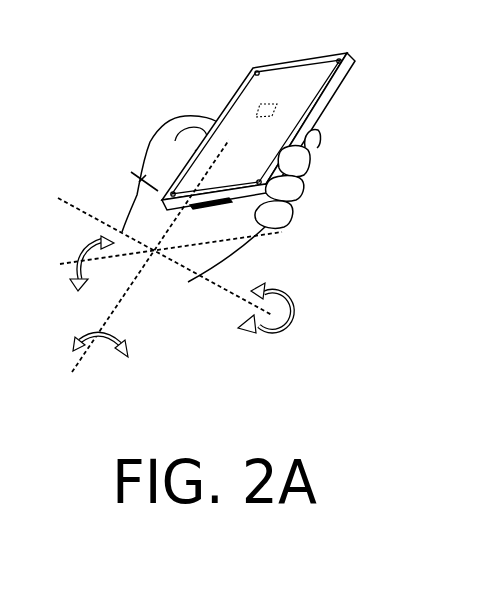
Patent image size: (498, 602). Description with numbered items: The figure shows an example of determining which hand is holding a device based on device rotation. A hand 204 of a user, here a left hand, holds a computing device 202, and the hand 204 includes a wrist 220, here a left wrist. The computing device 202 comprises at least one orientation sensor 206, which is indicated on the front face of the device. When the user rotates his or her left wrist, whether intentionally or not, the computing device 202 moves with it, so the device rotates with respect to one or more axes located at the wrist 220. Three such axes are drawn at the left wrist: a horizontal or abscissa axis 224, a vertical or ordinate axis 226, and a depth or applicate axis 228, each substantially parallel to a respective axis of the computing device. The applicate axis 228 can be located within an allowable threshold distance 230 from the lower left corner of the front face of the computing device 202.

The computing device 202 is at (350, 53).
The hand 204 is at (150, 142).
The orientation sensor 206 is at (277, 107).
The wrist 220 is at (162, 270).
The horizontal axis 224 is at (230, 242).
The vertical axis 226 is at (130, 287).
The depth axis 228 is at (79, 211).
The allowable threshold distance 230 is at (121, 206).